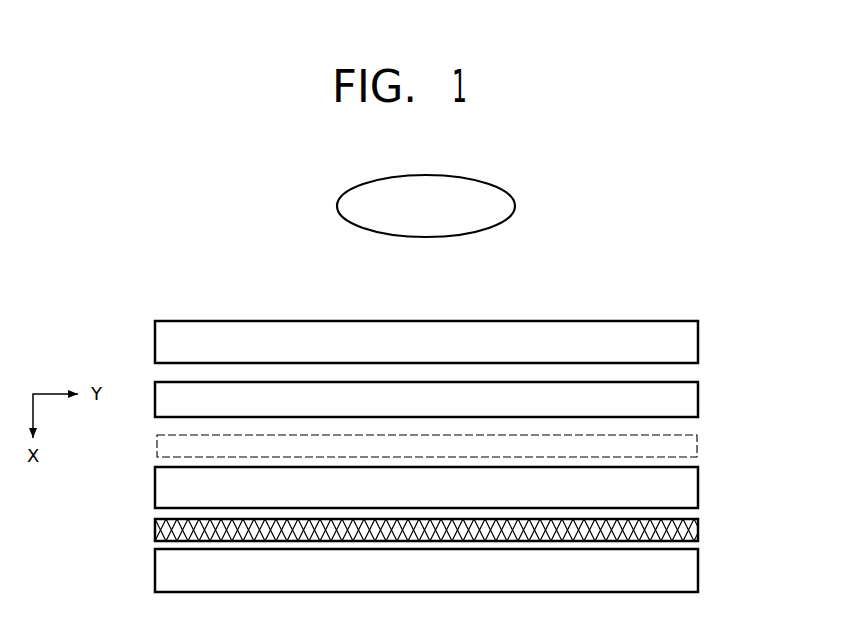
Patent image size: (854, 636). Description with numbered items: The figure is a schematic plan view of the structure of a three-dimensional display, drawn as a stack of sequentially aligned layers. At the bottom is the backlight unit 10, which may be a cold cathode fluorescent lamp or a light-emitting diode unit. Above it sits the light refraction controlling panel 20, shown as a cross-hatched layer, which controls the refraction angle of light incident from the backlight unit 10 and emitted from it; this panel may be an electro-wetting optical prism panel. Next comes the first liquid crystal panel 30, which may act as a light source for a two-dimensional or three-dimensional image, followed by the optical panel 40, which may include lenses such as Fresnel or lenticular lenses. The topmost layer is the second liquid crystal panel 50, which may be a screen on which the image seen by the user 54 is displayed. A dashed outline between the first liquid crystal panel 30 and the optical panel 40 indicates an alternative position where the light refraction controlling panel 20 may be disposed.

The backlight unit 10 is at (698, 570).
The light refraction controlling panel 20 is at (698, 529).
The first liquid crystal panel 30 is at (698, 488).
The optical panel 40 is at (698, 400).
The second liquid crystal panel 50 is at (698, 342).
The user 54 is at (515, 207).